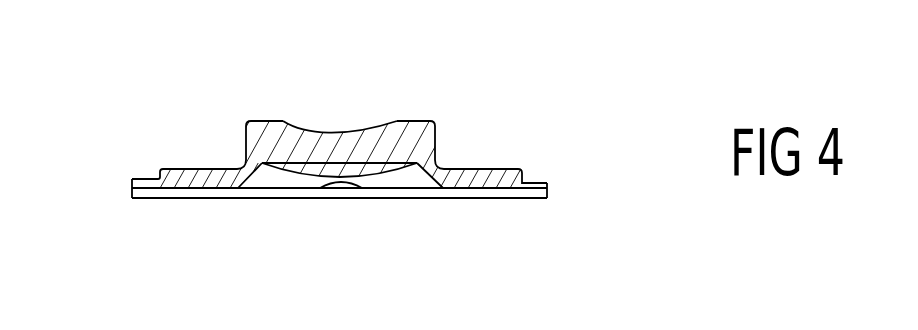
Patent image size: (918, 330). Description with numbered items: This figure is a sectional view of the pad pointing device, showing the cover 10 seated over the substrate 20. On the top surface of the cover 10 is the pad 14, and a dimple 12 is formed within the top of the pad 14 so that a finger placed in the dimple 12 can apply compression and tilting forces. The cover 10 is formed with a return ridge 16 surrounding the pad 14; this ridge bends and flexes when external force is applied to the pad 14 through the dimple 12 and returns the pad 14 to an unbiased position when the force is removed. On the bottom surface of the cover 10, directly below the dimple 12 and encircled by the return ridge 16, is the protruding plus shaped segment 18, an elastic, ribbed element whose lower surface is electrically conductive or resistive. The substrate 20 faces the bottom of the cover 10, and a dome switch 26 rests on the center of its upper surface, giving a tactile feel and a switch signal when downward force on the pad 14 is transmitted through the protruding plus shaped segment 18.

The cover 10 is at (160, 170).
The dimple 12 is at (323, 130).
The pad 14 is at (437, 126).
The return ridge 16 is at (240, 167).
The protruding plus shaped segment 18 is at (392, 173).
The substrate 20 is at (547, 193).
The dome switch 26 is at (335, 187).